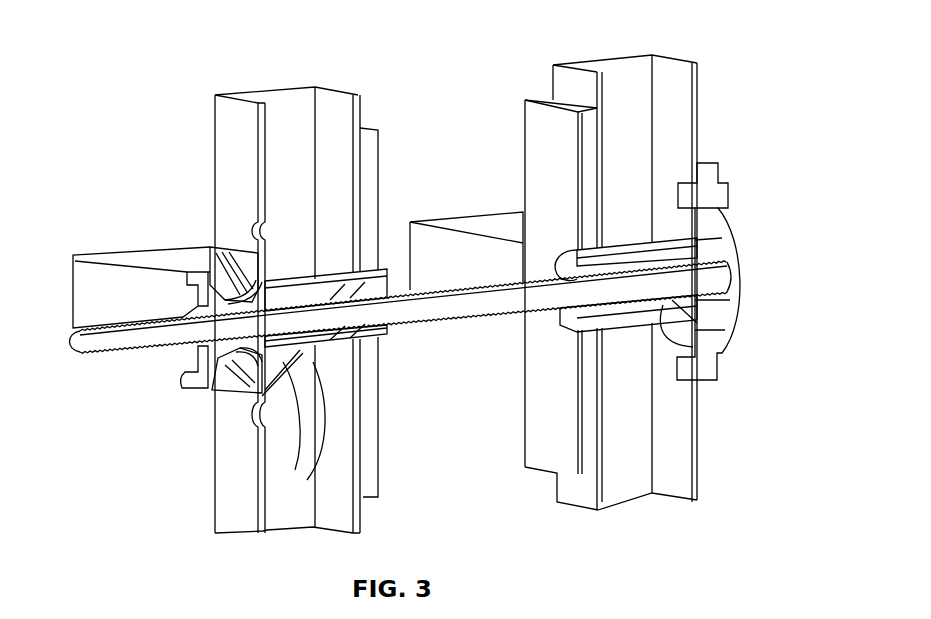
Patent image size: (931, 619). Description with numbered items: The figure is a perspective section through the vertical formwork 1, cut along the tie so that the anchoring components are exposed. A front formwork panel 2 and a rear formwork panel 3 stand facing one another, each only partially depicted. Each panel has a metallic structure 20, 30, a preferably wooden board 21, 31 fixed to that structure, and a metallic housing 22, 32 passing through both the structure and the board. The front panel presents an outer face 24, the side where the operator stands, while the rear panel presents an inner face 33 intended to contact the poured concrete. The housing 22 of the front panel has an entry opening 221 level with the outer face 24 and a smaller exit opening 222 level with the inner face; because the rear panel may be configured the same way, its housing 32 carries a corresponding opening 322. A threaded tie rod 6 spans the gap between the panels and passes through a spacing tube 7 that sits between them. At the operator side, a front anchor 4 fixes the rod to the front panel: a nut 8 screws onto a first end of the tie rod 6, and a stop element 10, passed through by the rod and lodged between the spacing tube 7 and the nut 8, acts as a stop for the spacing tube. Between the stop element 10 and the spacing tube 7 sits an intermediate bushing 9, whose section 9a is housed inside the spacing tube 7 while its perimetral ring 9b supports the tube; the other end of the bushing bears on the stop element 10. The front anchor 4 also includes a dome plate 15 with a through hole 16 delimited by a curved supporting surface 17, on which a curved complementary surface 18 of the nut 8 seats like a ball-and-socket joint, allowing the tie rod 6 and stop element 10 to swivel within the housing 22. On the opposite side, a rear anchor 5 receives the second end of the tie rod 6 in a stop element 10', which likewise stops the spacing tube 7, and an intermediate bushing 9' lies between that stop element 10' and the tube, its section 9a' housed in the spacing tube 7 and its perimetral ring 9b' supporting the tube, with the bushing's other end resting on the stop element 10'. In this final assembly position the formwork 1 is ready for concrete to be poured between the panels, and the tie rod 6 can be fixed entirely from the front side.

The vertical formwork 1 is at (440, 82).
The front formwork panel 2 is at (175, 91).
The rear formwork panel 3 is at (715, 61).
The front anchor 4 is at (201, 216).
The rear anchor 5 is at (745, 196).
The tie rod 6 is at (512, 300).
The spacing tube 7 is at (423, 280).
The nut 8 is at (212, 365).
The intermediate bushing 9 is at (357, 307).
The section 9a is at (353, 316).
The perimetral ring 9b is at (357, 358).
The intermediate bushing 9' is at (578, 298).
The section 9a' is at (578, 259).
The perimetral ring 9b' is at (616, 340).
The stop element 10 is at (348, 415).
The stop element 10' is at (729, 323).
The dome plate 15 is at (212, 245).
The through hole 16 is at (215, 355).
The curved supporting surface 17 is at (205, 262).
The curved complementary surface 18 is at (185, 312).
The structure 20 is at (280, 508).
The board 21 is at (385, 477).
The housing 22 is at (315, 470).
The outer face 24 is at (247, 140).
The structure 30 is at (630, 478).
The board 31 is at (527, 452).
The housing 32 is at (623, 330).
The inner face 33 is at (562, 146).
The entry opening 221 is at (265, 440).
The exit opening 222 is at (385, 268).
The flange of second profile 322 is at (556, 258).